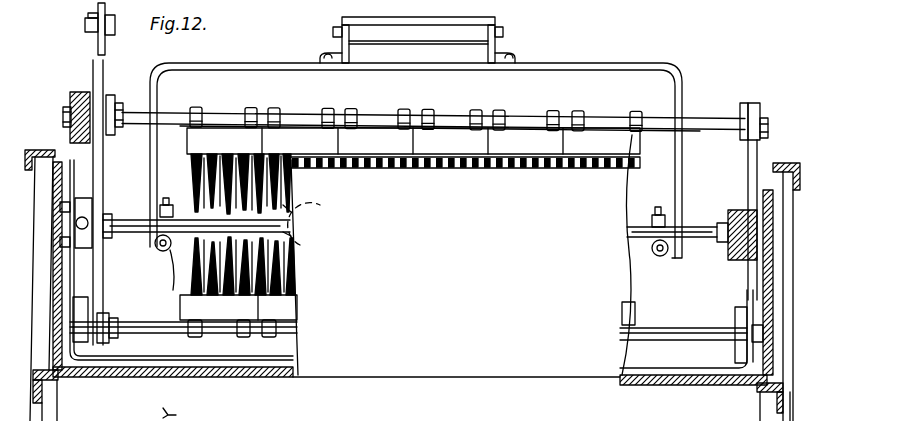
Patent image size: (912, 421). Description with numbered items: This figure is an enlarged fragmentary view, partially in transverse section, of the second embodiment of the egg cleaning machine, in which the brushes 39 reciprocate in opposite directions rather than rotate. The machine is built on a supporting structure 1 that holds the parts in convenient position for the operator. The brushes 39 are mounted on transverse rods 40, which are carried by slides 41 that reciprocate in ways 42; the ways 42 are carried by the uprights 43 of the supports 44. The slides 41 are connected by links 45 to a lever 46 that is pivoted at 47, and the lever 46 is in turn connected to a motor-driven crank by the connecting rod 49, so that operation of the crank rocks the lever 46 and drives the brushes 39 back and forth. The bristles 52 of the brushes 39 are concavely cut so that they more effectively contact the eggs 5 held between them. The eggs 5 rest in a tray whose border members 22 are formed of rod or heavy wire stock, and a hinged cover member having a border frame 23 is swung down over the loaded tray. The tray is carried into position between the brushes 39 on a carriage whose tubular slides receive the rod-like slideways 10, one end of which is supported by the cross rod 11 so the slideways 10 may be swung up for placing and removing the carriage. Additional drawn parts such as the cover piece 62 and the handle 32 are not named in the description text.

The supporting structure 1 is at (48, 150).
The eggs 5 is at (326, 228).
The rod-like slideways 10 is at (160, 250).
The cross rod 11 is at (169, 256).
The border members 22 is at (290, 240).
The border frame 23 is at (284, 208).
The handle 32 is at (342, 22).
The brushes 39 is at (215, 136).
The transverse rods 40 is at (292, 112).
The slides 41 is at (76, 97).
The ways 42 is at (84, 144).
The uprights 43 is at (76, 280).
The supports 44 is at (152, 372).
The links 45 is at (112, 132).
The lever 46 is at (104, 78).
The pivot 47 is at (86, 225).
The connecting rod 49 is at (86, 25).
The bristles 52 is at (196, 180).
The cover 62 is at (162, 78).